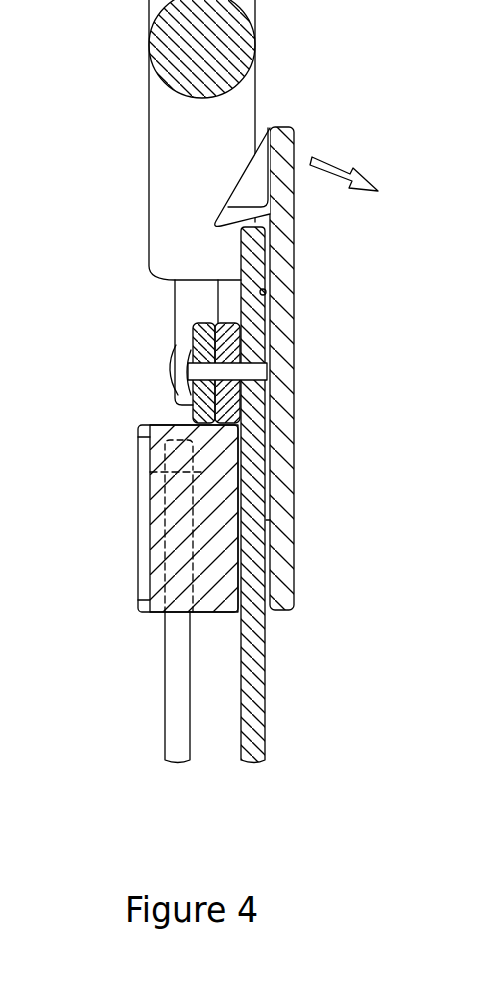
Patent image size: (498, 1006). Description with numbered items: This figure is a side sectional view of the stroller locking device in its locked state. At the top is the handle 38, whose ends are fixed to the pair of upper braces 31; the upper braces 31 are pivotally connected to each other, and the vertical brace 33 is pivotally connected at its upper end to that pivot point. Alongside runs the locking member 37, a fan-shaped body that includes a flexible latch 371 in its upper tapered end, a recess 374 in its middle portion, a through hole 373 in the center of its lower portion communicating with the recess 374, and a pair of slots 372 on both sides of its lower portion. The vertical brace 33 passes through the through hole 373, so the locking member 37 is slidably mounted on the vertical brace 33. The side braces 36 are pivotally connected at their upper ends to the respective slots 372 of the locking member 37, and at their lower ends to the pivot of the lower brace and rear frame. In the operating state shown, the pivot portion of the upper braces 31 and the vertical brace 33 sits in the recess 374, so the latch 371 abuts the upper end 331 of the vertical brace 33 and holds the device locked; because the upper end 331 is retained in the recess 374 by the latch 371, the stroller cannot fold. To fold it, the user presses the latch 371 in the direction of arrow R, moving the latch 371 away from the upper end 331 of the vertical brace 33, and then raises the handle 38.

The handle 38 is at (192, 122).
The flexible latch 371 is at (214, 222).
The upper end of the vertical brace 331 is at (182, 240).
The upper brace 31 is at (200, 360).
The recess 374 is at (266, 292).
The locking member 37 is at (293, 472).
The through hole 373 is at (268, 520).
The slot 372 is at (137, 558).
The side brace 36 is at (180, 685).
The vertical brace 33 is at (250, 700).
The arrow R is at (344, 160).